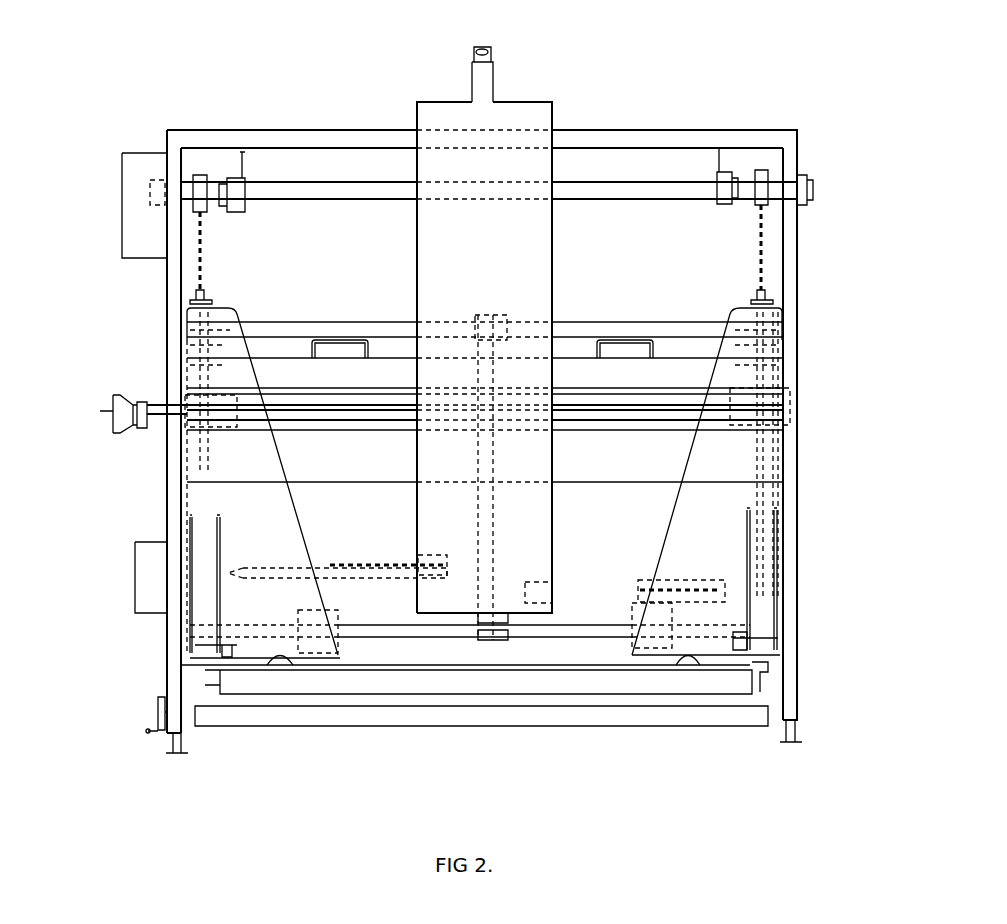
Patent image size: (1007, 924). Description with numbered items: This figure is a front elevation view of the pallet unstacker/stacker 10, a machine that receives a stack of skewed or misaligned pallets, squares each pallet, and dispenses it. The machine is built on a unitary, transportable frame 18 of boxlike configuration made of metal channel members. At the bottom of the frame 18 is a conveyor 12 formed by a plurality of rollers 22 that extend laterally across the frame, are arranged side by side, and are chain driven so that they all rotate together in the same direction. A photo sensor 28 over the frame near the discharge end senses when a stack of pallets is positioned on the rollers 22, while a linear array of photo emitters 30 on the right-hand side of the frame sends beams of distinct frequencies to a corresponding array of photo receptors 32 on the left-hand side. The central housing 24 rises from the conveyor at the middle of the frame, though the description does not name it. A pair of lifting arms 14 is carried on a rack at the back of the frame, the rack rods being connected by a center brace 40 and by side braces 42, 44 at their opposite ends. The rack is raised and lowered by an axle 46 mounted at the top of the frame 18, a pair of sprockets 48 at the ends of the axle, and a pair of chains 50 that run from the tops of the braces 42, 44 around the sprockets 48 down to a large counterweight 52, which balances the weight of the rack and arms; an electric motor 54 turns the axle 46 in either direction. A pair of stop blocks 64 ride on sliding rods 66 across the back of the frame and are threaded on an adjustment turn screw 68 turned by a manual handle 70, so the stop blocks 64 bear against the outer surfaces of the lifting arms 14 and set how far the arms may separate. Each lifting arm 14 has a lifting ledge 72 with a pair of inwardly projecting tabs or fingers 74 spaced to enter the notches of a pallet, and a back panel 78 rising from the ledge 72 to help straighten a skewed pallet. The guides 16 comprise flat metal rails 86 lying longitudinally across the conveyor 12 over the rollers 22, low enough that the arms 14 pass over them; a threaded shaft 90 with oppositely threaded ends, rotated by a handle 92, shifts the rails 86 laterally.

The pallet unstacker/stacker 10 is at (770, 82).
The conveyor 12 is at (600, 700).
The lifting arms 14 is at (237, 517).
The guides 16 is at (190, 600).
The frame 18 is at (293, 128).
The rollers 22 is at (712, 705).
The housing 24 is at (540, 103).
The photo sensor 28 is at (487, 47).
The photo emitters 30 is at (770, 680).
The photo receptors 32 is at (190, 665).
The brace 40 is at (200, 175).
The brace 42 is at (188, 340).
The brace 44 is at (782, 338).
The axle 46 is at (622, 180).
The sprockets 48 is at (762, 170).
The chains 50 is at (198, 242).
The counterweight 52 is at (605, 375).
The electric motor 54 is at (135, 185).
The stop blocks 64 is at (220, 435).
The sliding rods 66 is at (285, 400).
The adjustment turn screw 68 is at (365, 395).
The manual handle 70 is at (100, 412).
The lifting ledge 72 is at (222, 648).
The tabs or fingers 74 is at (298, 620).
The back panel 78 is at (243, 573).
The rails 86 is at (285, 672).
The threaded shaft 90 is at (188, 740).
The handle 92 is at (158, 710).